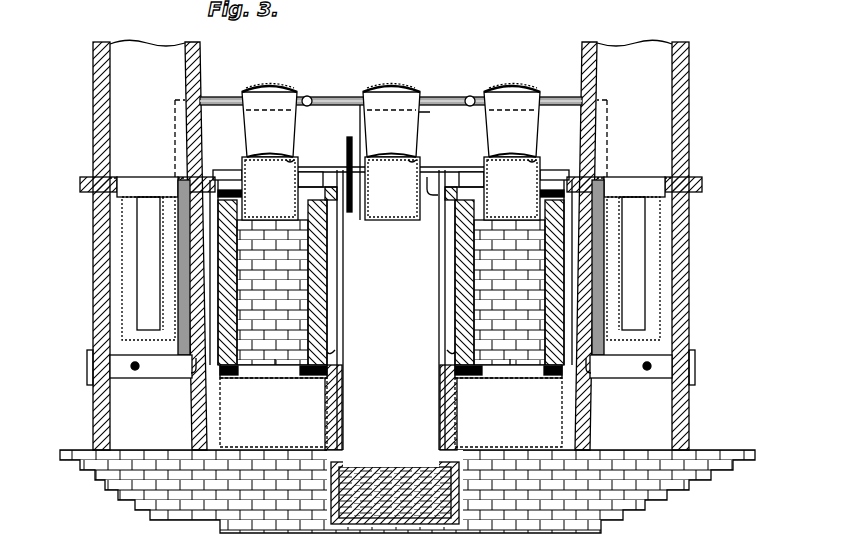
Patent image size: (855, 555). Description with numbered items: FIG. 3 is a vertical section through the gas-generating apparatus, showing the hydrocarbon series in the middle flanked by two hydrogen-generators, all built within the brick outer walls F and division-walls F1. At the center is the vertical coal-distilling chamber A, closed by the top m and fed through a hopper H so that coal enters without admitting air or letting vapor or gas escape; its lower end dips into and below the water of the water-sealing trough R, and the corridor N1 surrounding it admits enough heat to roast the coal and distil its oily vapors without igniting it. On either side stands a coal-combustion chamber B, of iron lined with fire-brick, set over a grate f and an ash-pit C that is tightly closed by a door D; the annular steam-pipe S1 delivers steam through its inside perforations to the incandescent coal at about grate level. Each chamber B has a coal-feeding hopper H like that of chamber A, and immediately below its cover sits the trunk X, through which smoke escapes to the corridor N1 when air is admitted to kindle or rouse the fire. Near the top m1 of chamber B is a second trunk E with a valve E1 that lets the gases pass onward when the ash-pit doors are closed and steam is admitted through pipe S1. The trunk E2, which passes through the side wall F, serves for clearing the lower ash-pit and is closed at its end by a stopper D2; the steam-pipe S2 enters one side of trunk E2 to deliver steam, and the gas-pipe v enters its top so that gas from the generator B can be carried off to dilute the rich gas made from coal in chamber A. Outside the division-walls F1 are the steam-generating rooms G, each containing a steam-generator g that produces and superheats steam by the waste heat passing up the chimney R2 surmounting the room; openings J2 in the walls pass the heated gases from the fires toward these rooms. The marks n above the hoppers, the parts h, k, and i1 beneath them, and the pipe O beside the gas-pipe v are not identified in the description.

The water-sealing trough R is at (407, 490).
The outer walls F is at (391, 246).
The division-walls F1 is at (391, 246).
The chimney R2 is at (391, 110).
The steam-generator g is at (391, 188).
The steam-generating room G is at (391, 273).
The trunk E is at (391, 272).
The trunk E2 is at (391, 366).
The steam-pipe S2 is at (643, 384).
The opening J2 is at (389, 364).
The door D is at (81, 367).
The stopper D2 is at (702, 364).
The coal-combustion chamber B is at (391, 267).
The coal-distilling chamber A is at (391, 310).
The corridor N1 is at (394, 345).
The top m is at (391, 162).
The trunk X is at (391, 179).
The top m1 is at (391, 169).
The gas-pipe v is at (391, 100).
The rod O is at (347, 162).
The valve E1 is at (432, 193).
The hopper H is at (391, 121).
The hopper lid n is at (391, 78).
The feed box h is at (391, 188).
The valve k is at (391, 151).
The hinge i1 is at (410, 167).
The grate f is at (496, 388).
The steam-pipe S1 is at (392, 352).
The ash-pit C is at (391, 412).